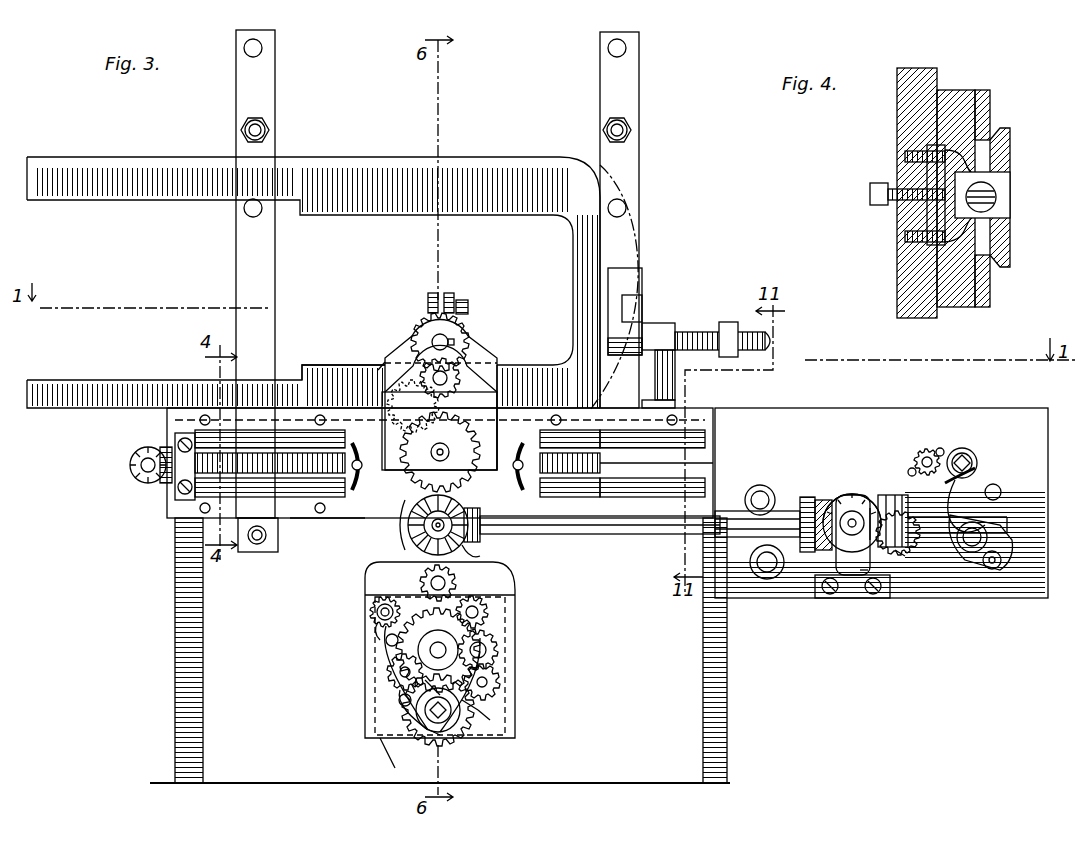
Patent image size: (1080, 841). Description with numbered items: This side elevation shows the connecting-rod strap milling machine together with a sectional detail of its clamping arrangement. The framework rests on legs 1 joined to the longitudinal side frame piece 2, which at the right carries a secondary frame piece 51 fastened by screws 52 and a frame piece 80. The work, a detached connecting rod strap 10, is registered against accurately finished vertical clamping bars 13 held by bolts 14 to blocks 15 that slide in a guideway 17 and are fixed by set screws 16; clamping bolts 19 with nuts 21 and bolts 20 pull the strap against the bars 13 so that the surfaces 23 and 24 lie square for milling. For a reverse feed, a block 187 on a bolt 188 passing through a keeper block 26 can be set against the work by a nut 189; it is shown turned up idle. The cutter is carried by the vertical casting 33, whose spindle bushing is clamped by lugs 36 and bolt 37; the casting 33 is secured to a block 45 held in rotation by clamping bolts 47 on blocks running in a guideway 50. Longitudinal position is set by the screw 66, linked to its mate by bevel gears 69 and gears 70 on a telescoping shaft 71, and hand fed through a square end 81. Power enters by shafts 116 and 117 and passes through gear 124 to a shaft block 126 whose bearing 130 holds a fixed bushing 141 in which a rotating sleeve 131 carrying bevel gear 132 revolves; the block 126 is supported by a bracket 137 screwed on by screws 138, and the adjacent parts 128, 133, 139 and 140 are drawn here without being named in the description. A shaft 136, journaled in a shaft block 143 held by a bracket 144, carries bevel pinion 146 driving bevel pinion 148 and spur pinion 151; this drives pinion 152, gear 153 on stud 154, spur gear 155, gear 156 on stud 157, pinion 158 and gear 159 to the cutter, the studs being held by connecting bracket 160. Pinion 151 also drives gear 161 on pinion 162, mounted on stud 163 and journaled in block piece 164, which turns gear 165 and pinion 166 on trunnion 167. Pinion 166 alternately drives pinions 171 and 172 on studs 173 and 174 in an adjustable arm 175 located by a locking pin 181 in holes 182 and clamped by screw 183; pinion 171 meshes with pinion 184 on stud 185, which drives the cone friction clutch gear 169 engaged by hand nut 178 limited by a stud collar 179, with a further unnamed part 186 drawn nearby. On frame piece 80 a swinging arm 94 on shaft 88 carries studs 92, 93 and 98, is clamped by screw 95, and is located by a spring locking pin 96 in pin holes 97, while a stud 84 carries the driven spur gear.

In FIG. 3, the legs 1 is at (192, 618).
In FIG. 4, the longitudinal side frame piece 2 is at (990, 112).
In FIG. 3, the connecting rod strap 10 is at (357, 157).
In FIG. 3, the vertical clamping bar 13 is at (262, 79).
In FIG. 4, the vertical clamping bar 13 is at (905, 270).
In FIG. 4, the bolt 14 is at (902, 157).
In FIG. 4, the block 15 is at (927, 218).
In FIG. 4, the set screw 16 is at (868, 193).
In FIG. 4, the guideway 17 is at (961, 90).
In FIG. 3, the clamping bolt 19 is at (243, 128).
In FIG. 3, the clamping bolt 20 is at (257, 545).
In FIG. 3, the nut 21 is at (267, 124).
In FIG. 3, the surface 23 is at (514, 216).
In FIG. 3, the surface 24 is at (522, 365).
In FIG. 3, the keeper block 26 is at (663, 323).
In FIG. 3, the vertical casting 33 is at (392, 362).
In FIG. 3, the clamping lug 36 is at (440, 300).
In FIG. 3, the bolt 37 is at (466, 304).
In FIG. 3, the block 45 is at (592, 519).
In FIG. 3, the clamping bolt 47 is at (345, 500).
In FIG. 4, the guideway 50 is at (1008, 136).
In FIG. 3, the secondary frame piece 51 is at (298, 522).
In FIG. 3, the screw 52 is at (318, 408).
In FIG. 3, the longitudinal screw 66 is at (255, 462).
In FIG. 4, the longitudinal screw 66 is at (996, 201).
In FIG. 3, the bevel gear 69 is at (178, 495).
In FIG. 3, the gear 70 is at (130, 465).
In FIG. 3, the telescoping shaft 71 is at (140, 478).
In FIG. 3, the frame piece 80 is at (793, 598).
In FIG. 3, the square end 81 is at (975, 456).
In FIG. 3, the stud 84 is at (1003, 492).
In FIG. 3, the shaft 88 is at (965, 555).
In FIG. 3, the stud 92 is at (1010, 524).
In FIG. 3, the stud 93 is at (996, 568).
In FIG. 3, the arm 94 is at (978, 560).
In FIG. 3, the clamping screw 95 is at (975, 480).
In FIG. 3, the spring locking pin 96 is at (930, 450).
In FIG. 3, the pin holes 97 is at (950, 450).
In FIG. 3, the stud 98 is at (1012, 545).
In FIG. 3, the shaft 116 is at (762, 490).
In FIG. 3, the live driving shaft 117 is at (757, 566).
In FIG. 3, the gear 124 is at (905, 556).
In FIG. 3, the shaft block 126 is at (846, 495).
In FIG. 3, the housing 128 is at (855, 495).
In FIG. 3, the bearing 130 is at (840, 498).
In FIG. 3, the rotating sleeve 131 is at (805, 552).
In FIG. 3, the bevel gear 132 is at (822, 500).
In FIG. 3, the shaft 133 is at (745, 510).
In FIG. 3, the shaft 136 is at (829, 595).
In FIG. 3, the supporting bracket 137 is at (853, 575).
In FIG. 3, the screw 138 is at (870, 592).
In FIG. 3, the collar 139 is at (905, 495).
In FIG. 3, the pawl 140 is at (887, 552).
In FIG. 3, the fixed bushing 141 is at (895, 496).
In FIG. 3, the shaft block 143 is at (405, 535).
In FIG. 3, the bracket 144 is at (420, 520).
In FIG. 3, the bevel pinion 146 is at (500, 546).
In FIG. 3, the bevel pinion 148 is at (462, 512).
In FIG. 3, the spur pinion 151 is at (428, 528).
In FIG. 3, the spur pinion 152 is at (439, 452).
In FIG. 3, the gear 153 is at (419, 406).
In FIG. 3, the stud 154 is at (450, 448).
In FIG. 3, the spur gear 155 is at (439, 431).
In FIG. 3, the gear 156 is at (470, 368).
In FIG. 3, the stud 157 is at (460, 346).
In FIG. 3, the pinion 158 is at (385, 362).
In FIG. 3, the gear 159 is at (420, 330).
In FIG. 3, the connecting bracket 160 is at (342, 380).
In FIG. 3, the gear 161 is at (500, 563).
In FIG. 3, the pinion 162 is at (458, 585).
In FIG. 3, the stud 163 is at (430, 585).
In FIG. 3, the block piece 164 is at (515, 640).
In FIG. 3, the gear 165 is at (488, 612).
In FIG. 3, the pinion 166 is at (392, 652).
In FIG. 3, the trunnion 167 is at (472, 645).
In FIG. 3, the cone friction clutch gear 169 is at (450, 744).
In FIG. 3, the pinion 171 is at (490, 650).
In FIG. 3, the pinion 172 is at (395, 675).
In FIG. 3, the stud 173 is at (490, 658).
In FIG. 3, the stud 174 is at (400, 700).
In FIG. 3, the adjustable arm 175 is at (425, 715).
In FIG. 3, the hand nut 178 is at (395, 768).
In FIG. 3, the stud collar 179 is at (498, 720).
In FIG. 3, the locking pin 181 is at (372, 606).
In FIG. 3, the holes 182 is at (378, 628).
In FIG. 3, the clamping screw 183 is at (386, 640).
In FIG. 3, the pinion 184 is at (500, 686).
In FIG. 3, the stud 185 is at (485, 700).
In FIG. 3, the arm 186 is at (438, 712).
In FIG. 3, the block 187 is at (625, 290).
In FIG. 3, the bolt 188 is at (697, 335).
In FIG. 3, the nut 189 is at (735, 322).